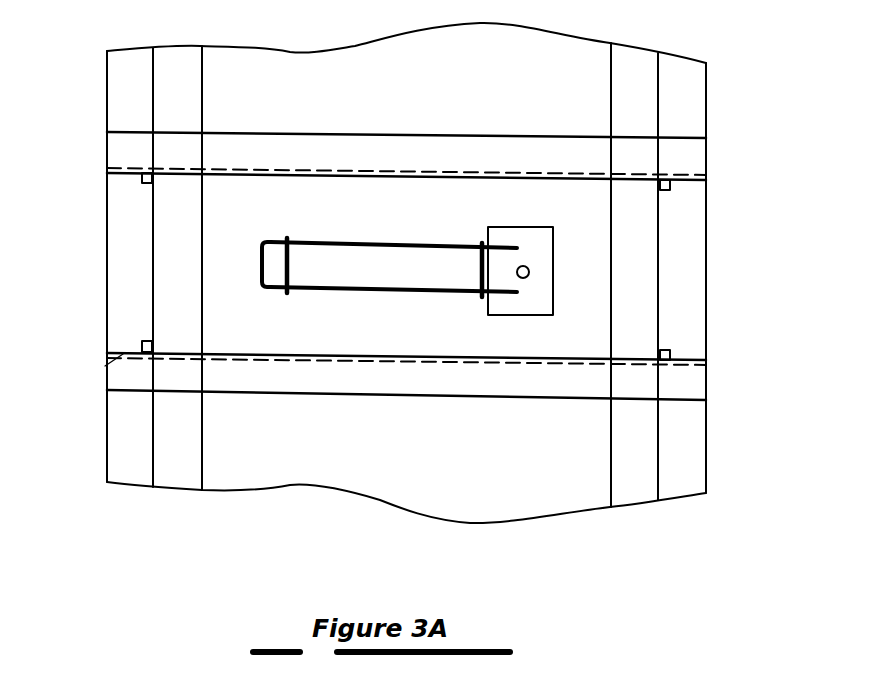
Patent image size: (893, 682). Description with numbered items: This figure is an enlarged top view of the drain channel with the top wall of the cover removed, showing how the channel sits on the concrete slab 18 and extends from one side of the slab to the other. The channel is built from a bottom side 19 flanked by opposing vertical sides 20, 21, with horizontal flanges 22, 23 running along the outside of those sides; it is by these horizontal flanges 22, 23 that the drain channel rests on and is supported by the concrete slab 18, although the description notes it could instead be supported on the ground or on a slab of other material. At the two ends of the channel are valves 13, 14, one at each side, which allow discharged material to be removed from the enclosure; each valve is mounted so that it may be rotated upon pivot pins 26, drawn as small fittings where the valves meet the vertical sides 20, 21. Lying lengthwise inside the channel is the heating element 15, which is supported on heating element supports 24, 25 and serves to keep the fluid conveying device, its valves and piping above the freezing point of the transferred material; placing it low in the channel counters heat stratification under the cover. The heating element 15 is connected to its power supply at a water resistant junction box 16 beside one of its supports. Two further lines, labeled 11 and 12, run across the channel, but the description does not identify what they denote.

The first longitudinal frame member 11 is at (203, 88).
The second longitudinal frame member 12 is at (610, 82).
The valve 13 is at (140, 242).
The valve 14 is at (693, 247).
The heating element 15 is at (329, 246).
The junction box 16 is at (508, 306).
The concrete slab 18 is at (375, 84).
The bottom side 19 is at (387, 218).
The vertical side 20 is at (107, 357).
The vertical side 21 is at (706, 170).
The horizontal flange 22 is at (375, 389).
The horizontal flange 23 is at (382, 167).
The heating element support 24 is at (290, 236).
The heating element support 25 is at (480, 242).
The pivot pin 26 is at (150, 185).